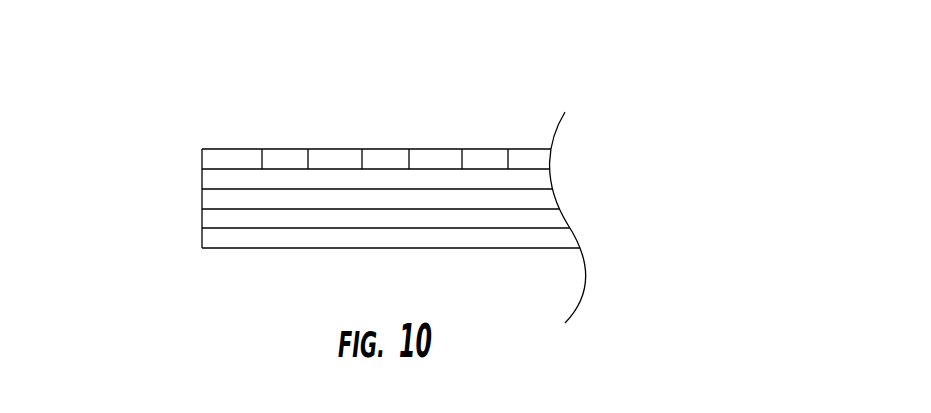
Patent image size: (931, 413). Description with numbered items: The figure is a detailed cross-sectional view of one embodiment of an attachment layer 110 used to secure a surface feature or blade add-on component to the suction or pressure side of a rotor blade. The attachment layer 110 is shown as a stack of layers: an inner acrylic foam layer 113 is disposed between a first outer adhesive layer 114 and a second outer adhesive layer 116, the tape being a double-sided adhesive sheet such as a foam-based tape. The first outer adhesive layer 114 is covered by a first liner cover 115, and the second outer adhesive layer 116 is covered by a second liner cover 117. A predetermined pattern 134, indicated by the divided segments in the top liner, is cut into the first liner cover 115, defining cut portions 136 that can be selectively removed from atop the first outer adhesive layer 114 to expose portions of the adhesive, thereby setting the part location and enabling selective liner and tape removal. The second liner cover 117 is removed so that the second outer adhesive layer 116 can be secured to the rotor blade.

The attachment layer 110 is at (121, 118).
The inner acrylic foam layer 113 is at (202, 199).
The first outer adhesive layer 114 is at (202, 178).
The first liner cover 115 is at (222, 148).
The second outer adhesive layer 116 is at (202, 218).
The second liner cover 117 is at (250, 249).
The predetermined pattern 134 is at (335, 149).
The cut portions 136 is at (284, 158).